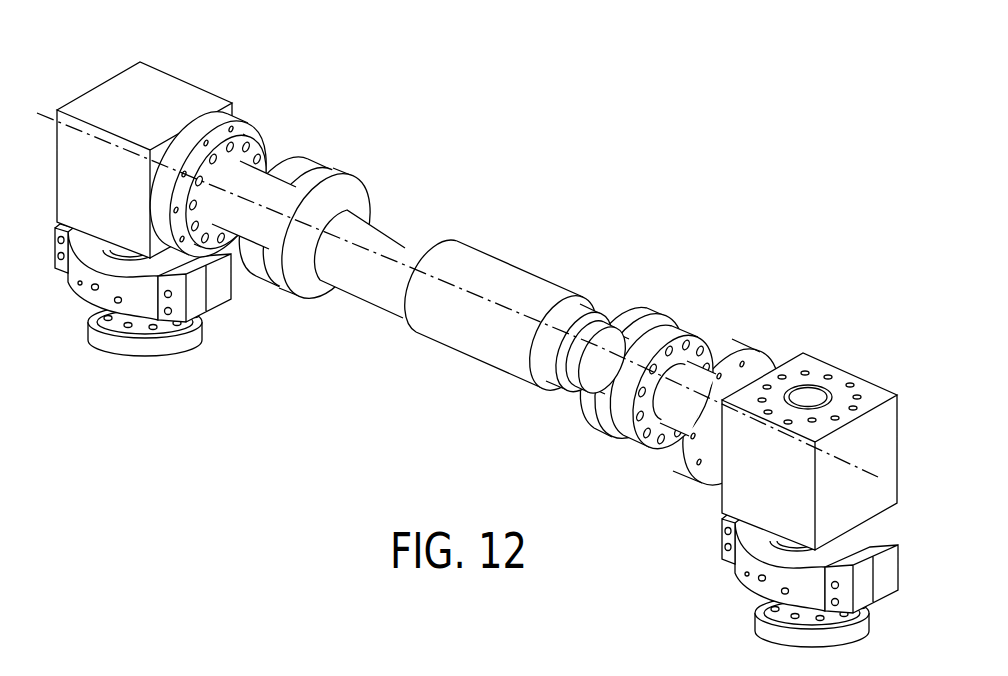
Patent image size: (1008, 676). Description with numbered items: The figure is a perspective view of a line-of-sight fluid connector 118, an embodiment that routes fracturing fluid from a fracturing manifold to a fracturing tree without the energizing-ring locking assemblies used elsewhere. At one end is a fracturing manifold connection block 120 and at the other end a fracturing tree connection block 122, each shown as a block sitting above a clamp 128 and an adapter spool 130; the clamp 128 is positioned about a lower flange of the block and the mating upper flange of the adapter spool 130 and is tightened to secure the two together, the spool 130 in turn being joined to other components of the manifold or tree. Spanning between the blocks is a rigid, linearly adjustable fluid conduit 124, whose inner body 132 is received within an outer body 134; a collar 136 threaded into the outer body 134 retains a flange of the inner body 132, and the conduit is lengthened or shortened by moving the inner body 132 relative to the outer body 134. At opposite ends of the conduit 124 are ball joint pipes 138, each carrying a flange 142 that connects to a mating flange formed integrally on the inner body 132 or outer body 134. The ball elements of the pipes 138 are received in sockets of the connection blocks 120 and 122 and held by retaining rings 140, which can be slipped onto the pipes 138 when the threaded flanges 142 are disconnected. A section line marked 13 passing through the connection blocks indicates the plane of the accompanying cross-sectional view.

The fluid connector 118 is at (550, 79).
The fracturing manifold connection block 120 is at (150, 82).
The fracturing tree connection block 122 is at (890, 418).
The fluid conduit 124 is at (387, 317).
The clamp 128 is at (58, 270).
The adapter spool 130 is at (185, 338).
The inner body 132 is at (597, 337).
The outer body 134 is at (482, 248).
The collar 136 is at (572, 318).
The ball joint pipe 138 is at (252, 180).
The retaining ring 140 is at (218, 130).
The flange 142 is at (298, 172).
The section line 13 is at (40, 111).